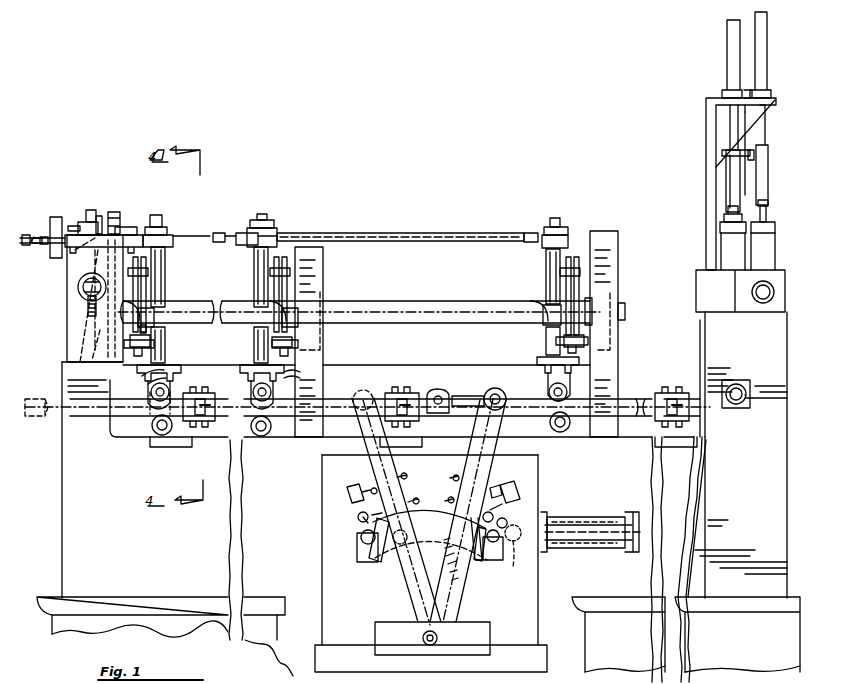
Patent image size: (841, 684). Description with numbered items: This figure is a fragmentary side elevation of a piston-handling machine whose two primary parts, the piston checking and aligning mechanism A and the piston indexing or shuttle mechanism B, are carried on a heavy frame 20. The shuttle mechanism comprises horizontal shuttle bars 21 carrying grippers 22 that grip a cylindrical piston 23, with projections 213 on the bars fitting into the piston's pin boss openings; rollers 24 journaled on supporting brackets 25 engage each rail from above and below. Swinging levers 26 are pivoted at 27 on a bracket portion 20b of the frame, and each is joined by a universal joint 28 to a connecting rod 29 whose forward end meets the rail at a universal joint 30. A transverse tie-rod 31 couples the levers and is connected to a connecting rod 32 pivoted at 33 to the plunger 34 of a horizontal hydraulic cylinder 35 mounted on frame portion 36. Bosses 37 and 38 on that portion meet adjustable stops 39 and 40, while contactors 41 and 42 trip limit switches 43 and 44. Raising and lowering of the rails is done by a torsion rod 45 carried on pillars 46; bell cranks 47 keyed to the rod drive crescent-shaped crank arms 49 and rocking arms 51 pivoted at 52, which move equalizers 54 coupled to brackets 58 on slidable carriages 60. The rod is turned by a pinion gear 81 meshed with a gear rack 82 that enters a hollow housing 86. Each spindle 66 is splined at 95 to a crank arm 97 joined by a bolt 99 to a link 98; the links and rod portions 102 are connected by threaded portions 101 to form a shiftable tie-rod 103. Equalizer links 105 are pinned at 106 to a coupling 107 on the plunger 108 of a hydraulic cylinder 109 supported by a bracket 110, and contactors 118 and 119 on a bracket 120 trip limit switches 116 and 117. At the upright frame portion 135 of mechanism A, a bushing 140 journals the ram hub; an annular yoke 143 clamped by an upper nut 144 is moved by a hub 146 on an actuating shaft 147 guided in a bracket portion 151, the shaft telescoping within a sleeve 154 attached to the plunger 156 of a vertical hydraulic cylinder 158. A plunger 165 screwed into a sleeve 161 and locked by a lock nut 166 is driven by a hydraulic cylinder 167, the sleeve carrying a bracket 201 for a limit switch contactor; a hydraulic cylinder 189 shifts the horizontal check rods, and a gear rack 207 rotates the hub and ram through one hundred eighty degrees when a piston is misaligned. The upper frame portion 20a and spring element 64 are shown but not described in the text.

The frame 20 is at (46, 523).
The upper frame portion 20a is at (191, 444).
The bracket portion 20b is at (375, 620).
The shuttle bars 21 is at (139, 410).
The grippers 22 is at (209, 422).
The piston 23 is at (212, 418).
The rollers 24 is at (154, 434).
The supporting brackets 25 is at (178, 376).
The swinging levers 26 is at (490, 432).
The pivot 27 is at (438, 639).
The universal joint 28 is at (501, 390).
The connecting rod 29 is at (482, 394).
The universal joint 30 is at (438, 393).
The tie-rod 31 is at (467, 528).
The connecting rod 32 is at (479, 562).
The pivotal connection 33 is at (517, 553).
The plunger 34 is at (583, 542).
The hydraulic cylinder 35 is at (588, 516).
The frame portion 36 is at (543, 572).
The movement limiting boss 37 is at (516, 478).
The movement limiting boss 38 is at (345, 488).
The adjustable stop 39 is at (502, 482).
The adjustable stop 40 is at (452, 478).
The limit switch contactor 41 is at (502, 494).
The limit switch contactor 42 is at (444, 493).
The limit switch 43 is at (493, 563).
The limit switch 44 is at (368, 560).
The torsion rod 45 is at (206, 306).
The pillars 46 is at (67, 346).
The bell cranks 47 is at (156, 320).
The crank arm 49 is at (146, 288).
The rocking arm 51 is at (166, 257).
The pivot 52 is at (150, 274).
The equalizer 54 is at (148, 334).
The bracket 58 is at (132, 345).
The carriage 60 is at (100, 350).
The spring 64 is at (176, 368).
The spindle 66 is at (152, 382).
The pinion gear 81 is at (100, 336).
The gear rack 82 is at (88, 304).
The hollow housing 86 is at (108, 262).
The splined portion 95 is at (164, 264).
The crank arm 97 is at (160, 228).
The link 98 is at (144, 233).
The bolt 99 is at (138, 233).
The threaded portions 101 is at (221, 232).
The rod portions 102 is at (180, 234).
The tie-rod 103 is at (438, 231).
The equalizer links 105 is at (130, 226).
The pin 106 is at (62, 244).
The coupling 107 is at (65, 246).
The plunger 108 is at (60, 256).
The hydraulic cylinder 109 is at (40, 246).
The bracket 110 is at (54, 224).
The limit switch 116 is at (82, 222).
The limit switch 117 is at (114, 212).
The limit switch contactor 118 is at (78, 226).
The limit switch contactor 119 is at (100, 215).
The bracket 120 is at (90, 210).
The upright frame portion 135 is at (720, 470).
The bushing 140 is at (731, 254).
The annular yoke 143 is at (720, 229).
The upper nut 144 is at (724, 218).
The hub 146 is at (790, 220).
The actuating shaft 147 is at (768, 213).
The bracket portion 151 is at (768, 262).
The sleeve 154 is at (773, 184).
The plunger 156 is at (764, 106).
The hydraulic cylinder 158 is at (764, 58).
The sleeve 161 is at (730, 176).
The plunger 165 is at (730, 116).
The lock nut 166 is at (726, 150).
The hydraulic cylinder 167 is at (732, 31).
The hydraulic cylinder 189 is at (738, 384).
The bracket 201 is at (754, 154).
The gear rack 207 is at (752, 292).
The projection 213 is at (208, 410).
The piston checking and aligning mechanism A is at (682, 340).
The shuttle mechanism B is at (638, 336).